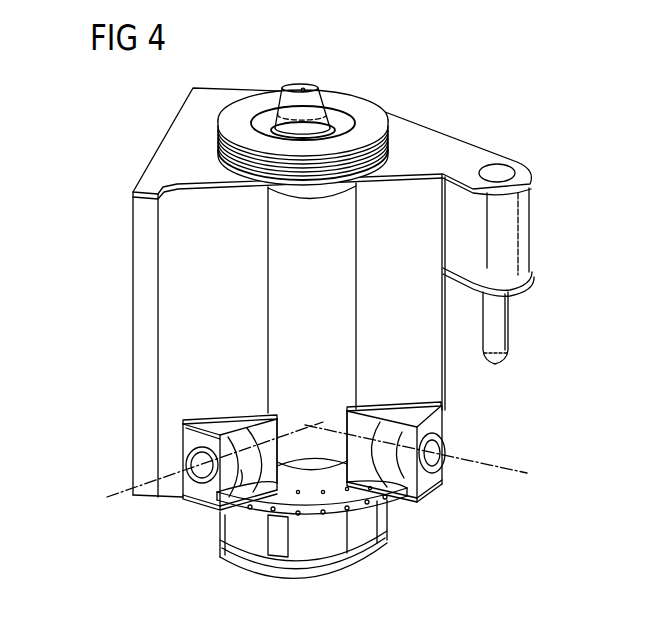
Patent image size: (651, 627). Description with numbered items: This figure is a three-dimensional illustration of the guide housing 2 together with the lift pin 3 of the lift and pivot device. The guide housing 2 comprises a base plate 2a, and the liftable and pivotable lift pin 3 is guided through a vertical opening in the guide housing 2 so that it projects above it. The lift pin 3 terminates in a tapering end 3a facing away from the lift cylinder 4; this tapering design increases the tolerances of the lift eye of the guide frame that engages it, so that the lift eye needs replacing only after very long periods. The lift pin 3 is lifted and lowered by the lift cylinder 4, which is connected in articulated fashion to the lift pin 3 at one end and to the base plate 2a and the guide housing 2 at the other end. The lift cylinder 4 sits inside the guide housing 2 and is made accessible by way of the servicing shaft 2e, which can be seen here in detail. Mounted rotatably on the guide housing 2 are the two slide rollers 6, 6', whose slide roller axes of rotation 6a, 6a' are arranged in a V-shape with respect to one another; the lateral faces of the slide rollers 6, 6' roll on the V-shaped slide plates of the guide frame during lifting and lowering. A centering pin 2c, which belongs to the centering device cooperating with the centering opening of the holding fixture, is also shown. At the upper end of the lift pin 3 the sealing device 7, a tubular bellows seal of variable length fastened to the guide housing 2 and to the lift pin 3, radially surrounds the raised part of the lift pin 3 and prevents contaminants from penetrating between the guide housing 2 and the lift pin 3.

The guide housing 2 is at (405, 130).
The base plate 2a is at (373, 553).
The centering pin 2c is at (498, 328).
The servicing shaft 2e is at (246, 541).
The lift pin 3 is at (345, 122).
The tapering end 3a is at (279, 99).
The lift cylinder 4 is at (277, 523).
The slide roller 6 is at (230, 480).
The slide roller 6' is at (396, 474).
The slide roller axis of rotation 6a is at (211, 459).
The slide roller axis of rotation 6a' is at (416, 438).
The sealing device 7 is at (220, 150).